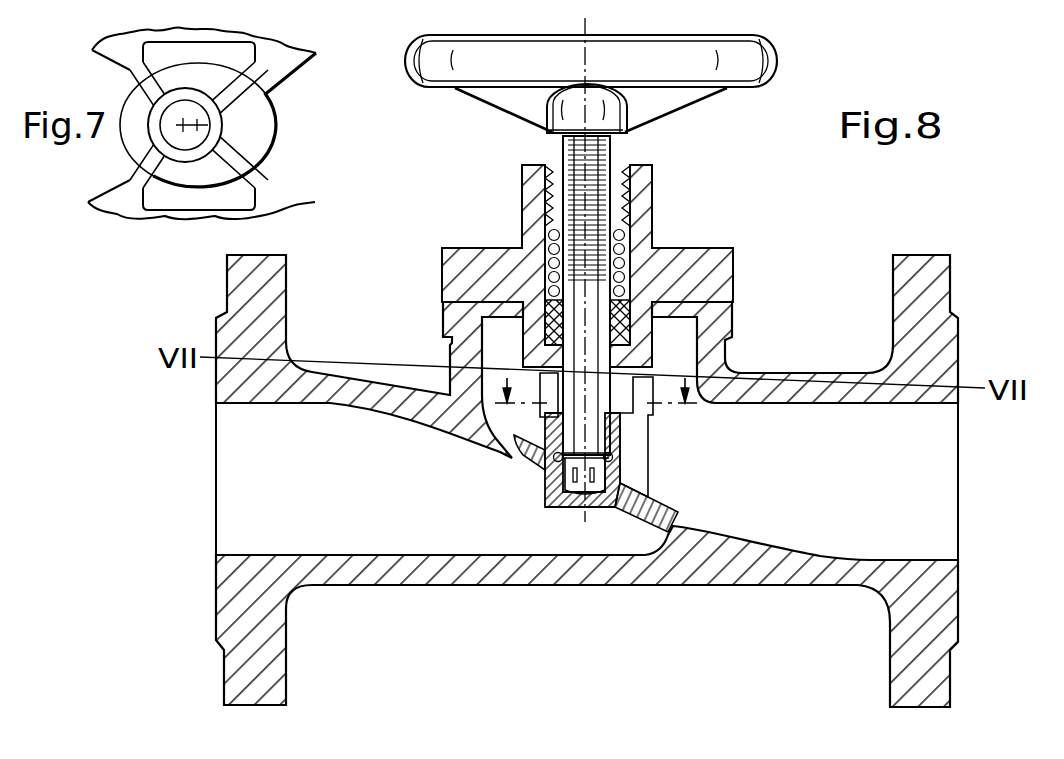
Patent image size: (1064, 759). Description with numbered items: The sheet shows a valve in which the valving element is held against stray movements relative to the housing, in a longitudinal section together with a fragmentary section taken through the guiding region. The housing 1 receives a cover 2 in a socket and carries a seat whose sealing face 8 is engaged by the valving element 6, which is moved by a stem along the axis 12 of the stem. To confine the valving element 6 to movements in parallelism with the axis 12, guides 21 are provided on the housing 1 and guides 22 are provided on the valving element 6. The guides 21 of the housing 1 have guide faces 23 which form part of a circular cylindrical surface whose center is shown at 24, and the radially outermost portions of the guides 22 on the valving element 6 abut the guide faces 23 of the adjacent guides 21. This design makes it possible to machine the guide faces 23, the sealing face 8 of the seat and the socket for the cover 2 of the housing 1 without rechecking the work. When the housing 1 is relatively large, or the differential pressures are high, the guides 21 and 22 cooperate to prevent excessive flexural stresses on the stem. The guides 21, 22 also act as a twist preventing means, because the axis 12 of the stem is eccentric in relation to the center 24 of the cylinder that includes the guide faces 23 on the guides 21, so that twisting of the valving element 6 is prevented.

In FIG. 8, the housing 1 is at (920, 347).
In FIG. 8, the cover 2 is at (678, 268).
In FIG. 7, the valving element 6 is at (212, 110).
In FIG. 8, the valving element 6 is at (540, 455).
In FIG. 7, the sealing face 8 is at (267, 92).
In FIG. 8, the sealing face 8 is at (523, 446).
In FIG. 7, the axis of the stem 12 is at (195, 128).
In FIG. 8, the axis of the stem 12 is at (625, 132).
In FIG. 7, the guides 21 is at (140, 202).
In FIG. 8, the guides 21 is at (655, 375).
In FIG. 7, the guides 22 is at (147, 177).
In FIG. 8, the guides 22 is at (635, 468).
In FIG. 7, the guide faces 23 is at (142, 184).
In FIG. 7, the center 24 is at (208, 125).